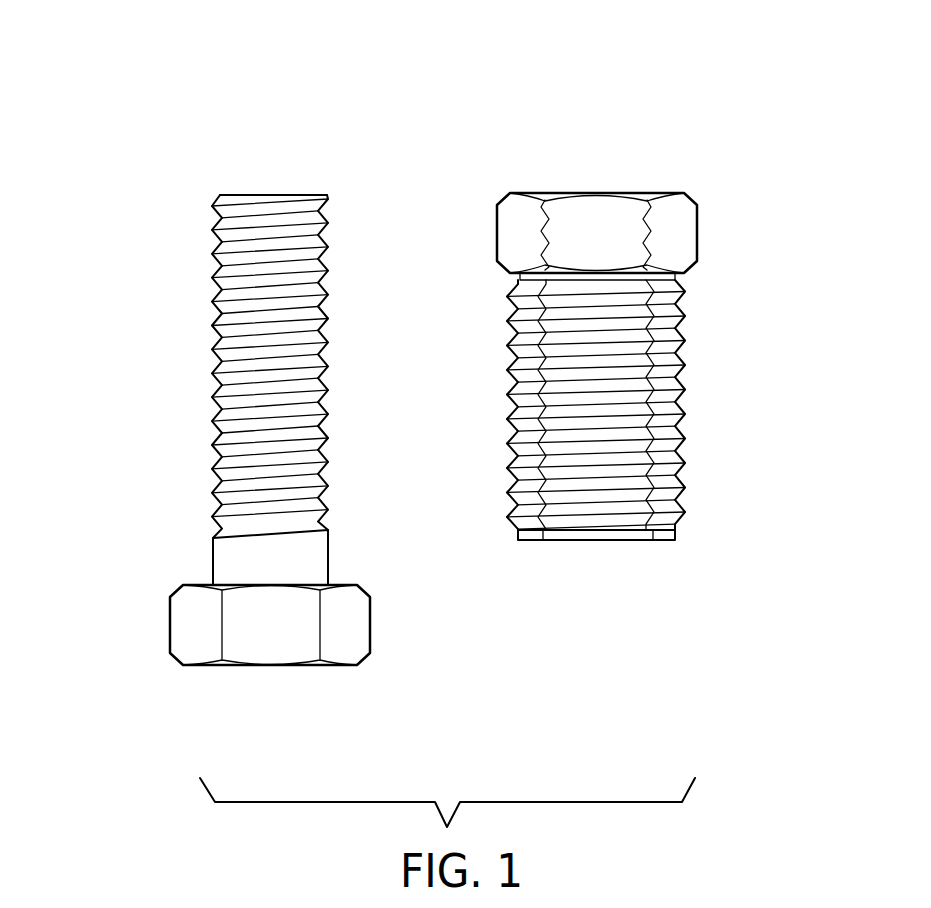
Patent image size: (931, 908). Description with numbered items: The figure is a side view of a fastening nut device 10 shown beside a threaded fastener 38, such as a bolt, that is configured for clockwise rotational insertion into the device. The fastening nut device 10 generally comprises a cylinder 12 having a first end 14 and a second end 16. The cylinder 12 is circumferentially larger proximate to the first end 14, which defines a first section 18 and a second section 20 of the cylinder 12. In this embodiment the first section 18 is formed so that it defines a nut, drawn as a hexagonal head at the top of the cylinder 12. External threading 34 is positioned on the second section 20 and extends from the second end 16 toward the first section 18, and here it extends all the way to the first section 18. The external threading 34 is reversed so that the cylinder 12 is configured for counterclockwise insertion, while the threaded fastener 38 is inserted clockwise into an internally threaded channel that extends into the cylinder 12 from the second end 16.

The fastening nut device 10 is at (423, 147).
The cylinder 12 is at (684, 374).
The first end 14 is at (598, 193).
The second end 16 is at (600, 545).
The first section 18 is at (698, 236).
The second section 20 is at (617, 425).
The external threading 34 is at (505, 325).
The threaded fastener 38 is at (213, 422).